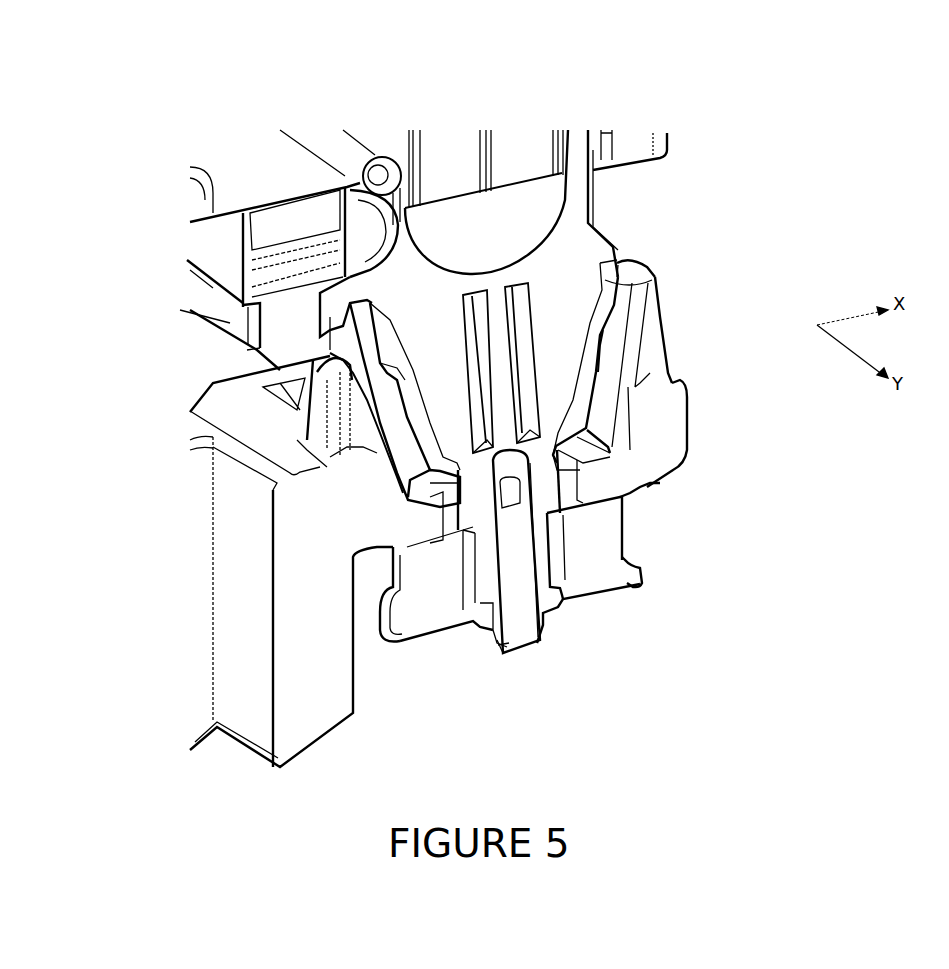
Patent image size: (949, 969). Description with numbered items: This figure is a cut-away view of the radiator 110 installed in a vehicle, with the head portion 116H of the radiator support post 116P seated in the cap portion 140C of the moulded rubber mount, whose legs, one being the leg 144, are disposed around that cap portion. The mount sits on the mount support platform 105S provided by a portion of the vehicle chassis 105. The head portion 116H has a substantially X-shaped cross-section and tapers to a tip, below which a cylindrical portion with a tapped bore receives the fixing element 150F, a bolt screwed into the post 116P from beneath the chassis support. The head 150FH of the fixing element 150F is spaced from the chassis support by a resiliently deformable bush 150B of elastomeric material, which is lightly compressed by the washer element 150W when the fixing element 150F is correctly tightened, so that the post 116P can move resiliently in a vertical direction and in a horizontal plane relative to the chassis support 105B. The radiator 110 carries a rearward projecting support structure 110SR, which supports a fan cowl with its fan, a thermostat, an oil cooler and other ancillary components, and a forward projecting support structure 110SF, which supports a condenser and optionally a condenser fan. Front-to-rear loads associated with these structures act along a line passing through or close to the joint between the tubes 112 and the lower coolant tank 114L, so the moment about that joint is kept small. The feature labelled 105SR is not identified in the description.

The radiator 110 is at (592, 76).
The tubes 112 is at (522, 148).
The lower coolant tank 114L is at (525, 219).
The forward projecting support structure 110SF is at (672, 133).
The radiator support post 116P is at (616, 221).
The head portion 116H is at (587, 252).
The cap portion 140C is at (657, 273).
The chassis support 105B is at (652, 337).
The base side rail 105SR is at (687, 421).
The mount support platform 105S is at (645, 486).
The resiliently deformable bush 150B is at (612, 548).
The washer element 150W is at (633, 587).
The fixing element 150F is at (546, 648).
The head of the fixing element 150FH is at (500, 658).
The vehicle chassis 105 is at (320, 717).
The rearward projecting support structure 110SR is at (230, 322).
The leg 144 is at (300, 370).